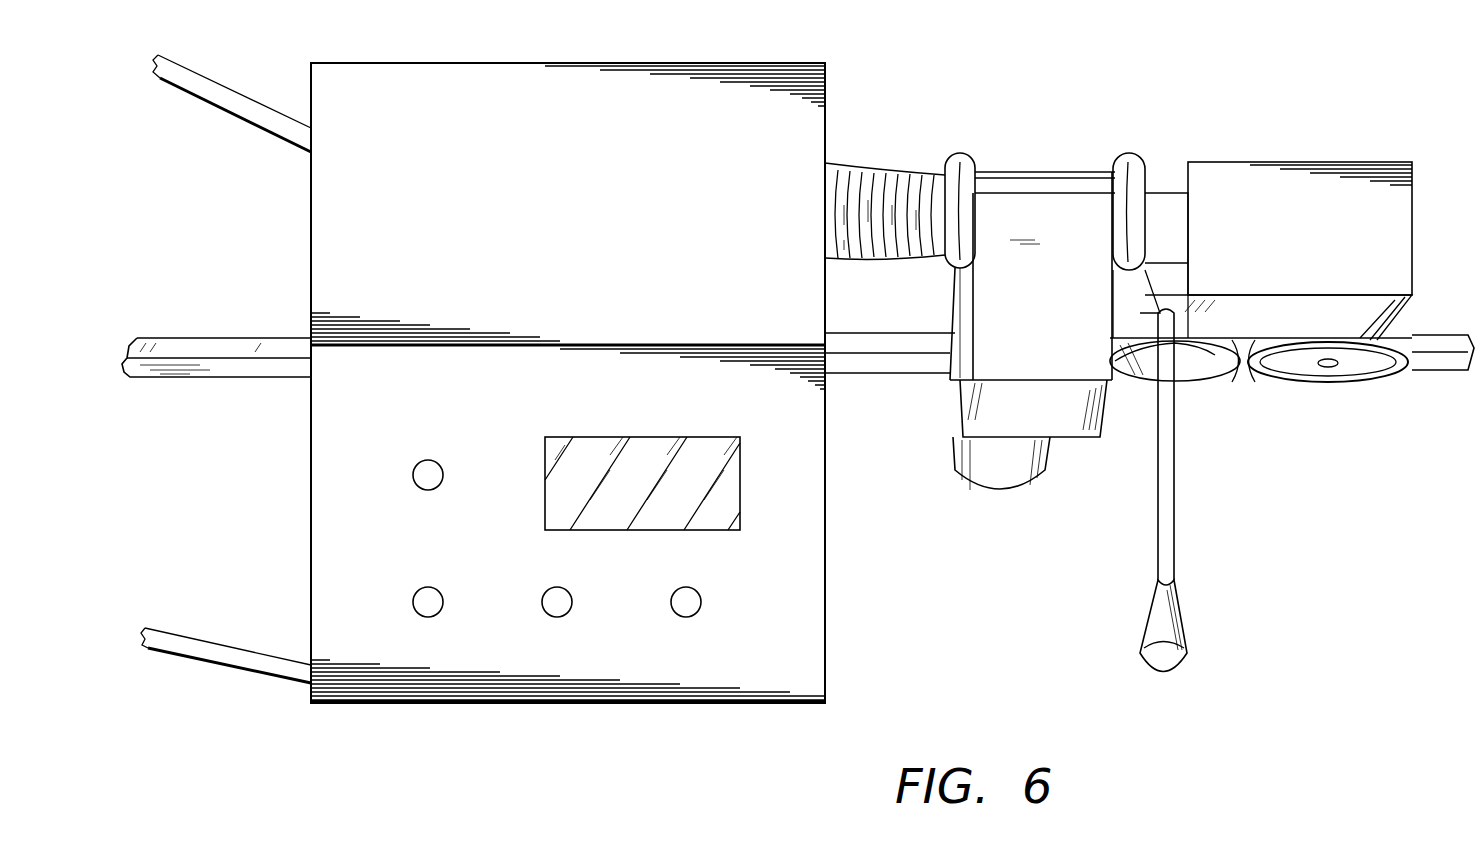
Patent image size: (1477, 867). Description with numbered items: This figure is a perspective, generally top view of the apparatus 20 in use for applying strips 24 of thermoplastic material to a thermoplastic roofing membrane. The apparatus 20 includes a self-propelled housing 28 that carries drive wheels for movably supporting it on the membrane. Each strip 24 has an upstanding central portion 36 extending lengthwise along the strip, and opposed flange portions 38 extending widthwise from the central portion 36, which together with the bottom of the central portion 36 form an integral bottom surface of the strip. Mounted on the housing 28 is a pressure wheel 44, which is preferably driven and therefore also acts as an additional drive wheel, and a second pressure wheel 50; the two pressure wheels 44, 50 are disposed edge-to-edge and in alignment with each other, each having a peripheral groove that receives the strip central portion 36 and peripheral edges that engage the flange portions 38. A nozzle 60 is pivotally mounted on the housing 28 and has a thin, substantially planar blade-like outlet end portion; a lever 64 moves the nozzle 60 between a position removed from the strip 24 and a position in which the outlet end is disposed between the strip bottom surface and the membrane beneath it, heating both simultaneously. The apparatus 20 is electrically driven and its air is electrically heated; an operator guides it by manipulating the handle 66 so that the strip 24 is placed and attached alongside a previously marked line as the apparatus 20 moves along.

The apparatus 20 is at (934, 77).
The strip 24 is at (798, 358).
The housing 28 is at (575, 45).
The central portion 36 is at (214, 338).
The flange portions 38 is at (249, 373).
The pressure wheel 44 is at (1205, 368).
The second pressure wheel 50 is at (1352, 375).
The nozzle 60 is at (1008, 475).
The lever 64 is at (1174, 518).
The handle 66 is at (215, 652).